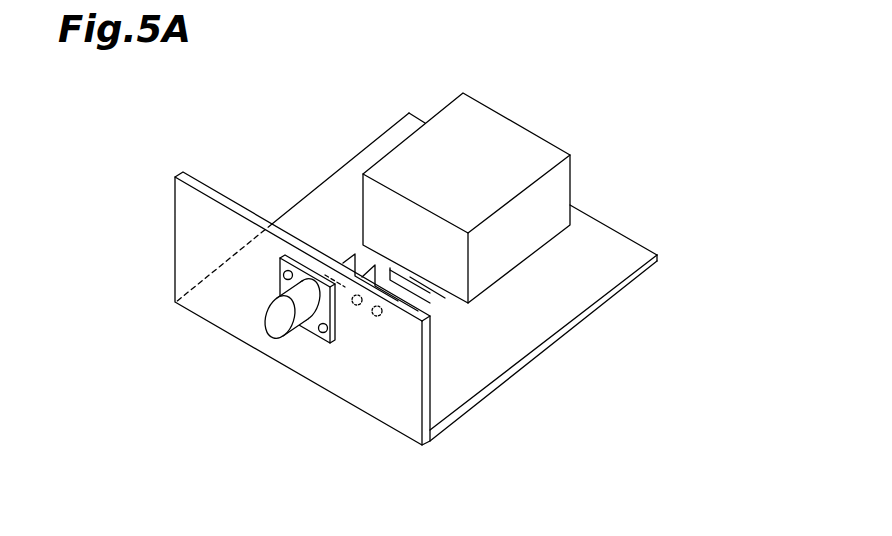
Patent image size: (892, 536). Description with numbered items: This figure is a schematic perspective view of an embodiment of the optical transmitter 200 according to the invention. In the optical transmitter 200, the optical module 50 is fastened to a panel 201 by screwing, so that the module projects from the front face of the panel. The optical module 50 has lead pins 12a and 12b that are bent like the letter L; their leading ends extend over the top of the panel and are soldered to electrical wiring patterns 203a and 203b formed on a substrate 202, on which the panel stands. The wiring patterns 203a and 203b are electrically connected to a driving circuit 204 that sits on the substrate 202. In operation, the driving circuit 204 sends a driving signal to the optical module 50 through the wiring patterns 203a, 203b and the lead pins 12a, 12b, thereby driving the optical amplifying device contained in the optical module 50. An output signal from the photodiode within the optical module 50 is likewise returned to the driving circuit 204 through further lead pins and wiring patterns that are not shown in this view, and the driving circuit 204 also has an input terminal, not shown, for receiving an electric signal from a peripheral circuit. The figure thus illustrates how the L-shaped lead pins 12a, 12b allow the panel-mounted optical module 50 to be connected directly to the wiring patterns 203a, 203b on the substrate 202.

The optical transmitter 200 is at (756, 113).
The panel 201 is at (418, 373).
The substrate 202 is at (523, 338).
The electrical wiring pattern 203a is at (390, 268).
The electrical wiring pattern 203b is at (410, 277).
The driving circuit 204 is at (535, 153).
The lead pin 12a is at (355, 256).
The lead pin 12b is at (366, 264).
The optical module 50 is at (313, 330).